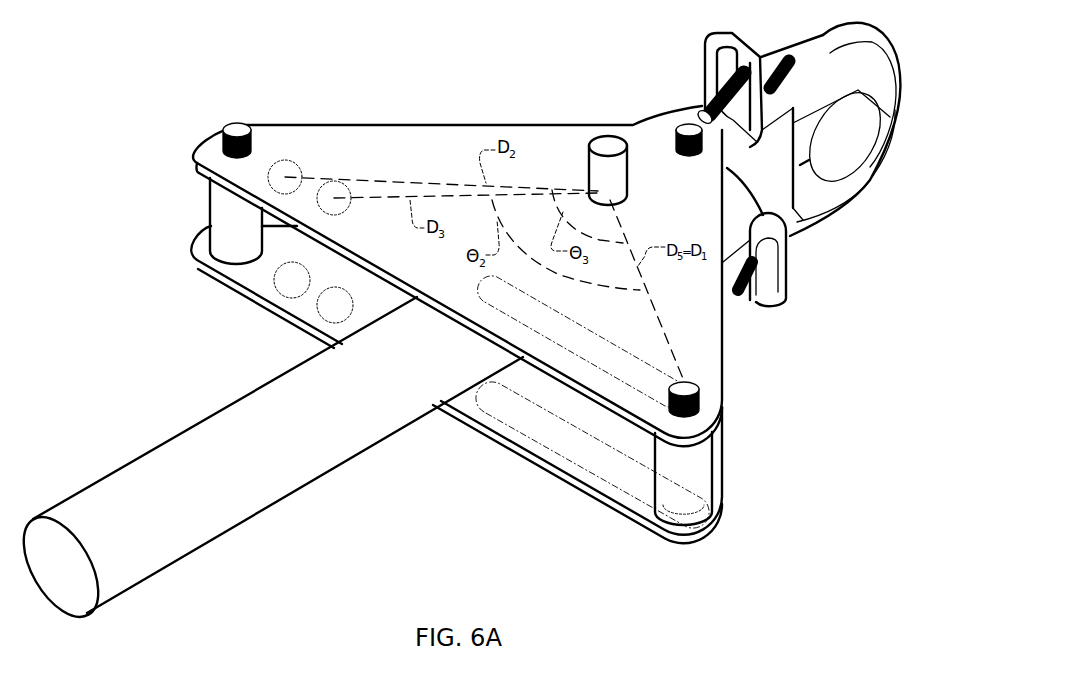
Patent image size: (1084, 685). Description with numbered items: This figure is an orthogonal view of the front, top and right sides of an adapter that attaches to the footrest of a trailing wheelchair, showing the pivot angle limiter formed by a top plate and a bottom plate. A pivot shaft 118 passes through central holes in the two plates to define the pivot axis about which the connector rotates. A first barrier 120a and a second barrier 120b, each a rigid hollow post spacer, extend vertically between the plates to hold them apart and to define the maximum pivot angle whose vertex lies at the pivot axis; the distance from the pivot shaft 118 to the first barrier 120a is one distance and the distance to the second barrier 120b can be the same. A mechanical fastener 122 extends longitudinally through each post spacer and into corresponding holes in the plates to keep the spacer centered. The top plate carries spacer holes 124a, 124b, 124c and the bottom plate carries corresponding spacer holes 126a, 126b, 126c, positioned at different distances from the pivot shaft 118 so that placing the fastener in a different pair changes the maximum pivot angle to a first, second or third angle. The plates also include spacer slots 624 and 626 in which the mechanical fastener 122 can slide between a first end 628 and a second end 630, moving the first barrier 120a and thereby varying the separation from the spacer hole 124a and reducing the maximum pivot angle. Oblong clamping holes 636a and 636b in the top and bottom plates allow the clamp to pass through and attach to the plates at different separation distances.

The pivot shaft 118 is at (607, 142).
The first barrier 120a is at (690, 453).
The second barrier 120b is at (212, 217).
The mechanical fastener 122 is at (236, 122).
The first spacer hole 124a is at (252, 143).
The spacer hole 124b is at (288, 165).
The spacer hole 124c is at (318, 195).
The first spacer hole 126a is at (206, 250).
The spacer hole 126b is at (278, 292).
The spacer hole 126c is at (328, 311).
The spacer slot 624 is at (483, 295).
The spacer slot 626 is at (583, 465).
The first end of the slot 628 is at (698, 540).
The second end of the slot 630 is at (494, 385).
The clamping hole 636a is at (726, 67).
The clamping hole 636b is at (738, 282).